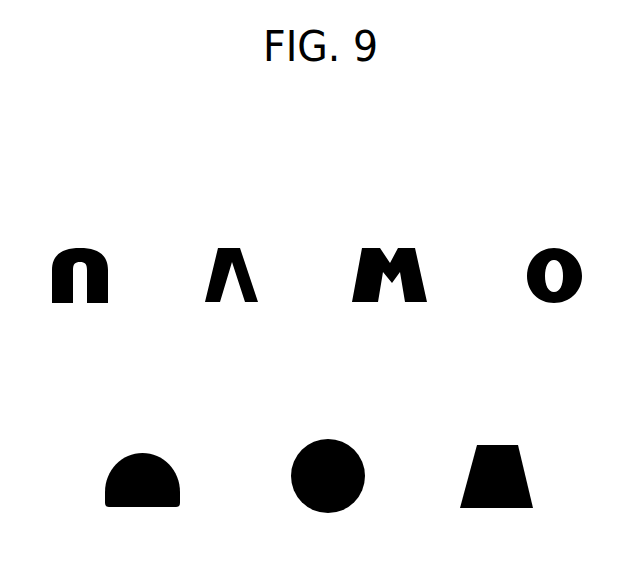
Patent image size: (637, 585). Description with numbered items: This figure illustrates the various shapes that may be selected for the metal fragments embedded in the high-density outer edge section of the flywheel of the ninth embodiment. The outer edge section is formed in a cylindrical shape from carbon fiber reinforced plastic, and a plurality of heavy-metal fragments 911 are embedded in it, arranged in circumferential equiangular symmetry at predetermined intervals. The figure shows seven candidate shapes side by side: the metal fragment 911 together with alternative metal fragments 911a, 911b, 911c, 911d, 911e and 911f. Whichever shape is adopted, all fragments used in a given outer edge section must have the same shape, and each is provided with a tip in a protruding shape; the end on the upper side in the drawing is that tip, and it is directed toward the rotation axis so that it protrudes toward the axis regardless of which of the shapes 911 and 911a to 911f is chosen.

The metal fragment 911 is at (80, 247).
The metal fragment 911a is at (230, 248).
The metal fragment 911b is at (400, 248).
The metal fragment 911c is at (555, 248).
The metal fragment 911d is at (138, 453).
The metal fragment 911e is at (330, 440).
The metal fragment 911f is at (493, 445).